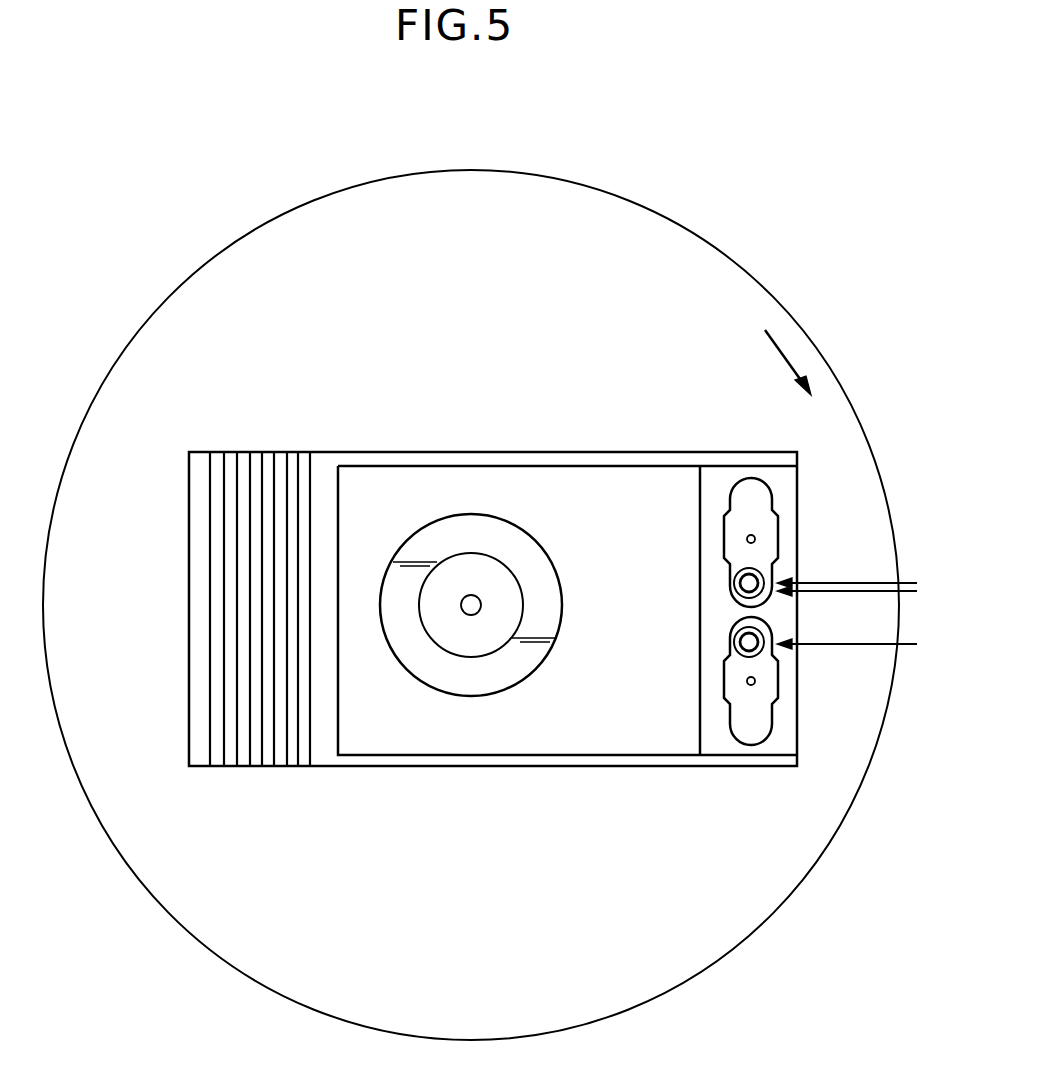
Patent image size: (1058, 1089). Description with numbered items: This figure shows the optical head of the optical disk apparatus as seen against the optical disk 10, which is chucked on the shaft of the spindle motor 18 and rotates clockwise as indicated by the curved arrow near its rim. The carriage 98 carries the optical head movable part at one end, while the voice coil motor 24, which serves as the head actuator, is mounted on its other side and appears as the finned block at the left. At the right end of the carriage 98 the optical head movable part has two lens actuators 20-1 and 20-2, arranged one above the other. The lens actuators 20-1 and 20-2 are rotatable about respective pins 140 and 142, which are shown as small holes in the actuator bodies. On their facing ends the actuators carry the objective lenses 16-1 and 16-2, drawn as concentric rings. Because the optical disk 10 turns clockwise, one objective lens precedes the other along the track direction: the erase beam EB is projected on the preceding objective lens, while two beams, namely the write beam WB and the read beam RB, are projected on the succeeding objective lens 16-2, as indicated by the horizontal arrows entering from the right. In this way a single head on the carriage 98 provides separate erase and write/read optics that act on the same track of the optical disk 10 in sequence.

The optical disk 10 is at (760, 290).
The carriage 98 is at (498, 767).
The voice coil motor 24 is at (257, 766).
The spindle motor 18 is at (430, 680).
The lens actuator 20-2 is at (742, 478).
The lens actuator 20-1 is at (751, 735).
The objective lens 16-2 is at (745, 584).
The objective lens 16-1 is at (745, 640).
The pin 142 is at (753, 539).
The pin 140 is at (753, 683).
The read beam RB is at (840, 584).
The write beam WB is at (840, 592).
The erase beam EB is at (840, 646).